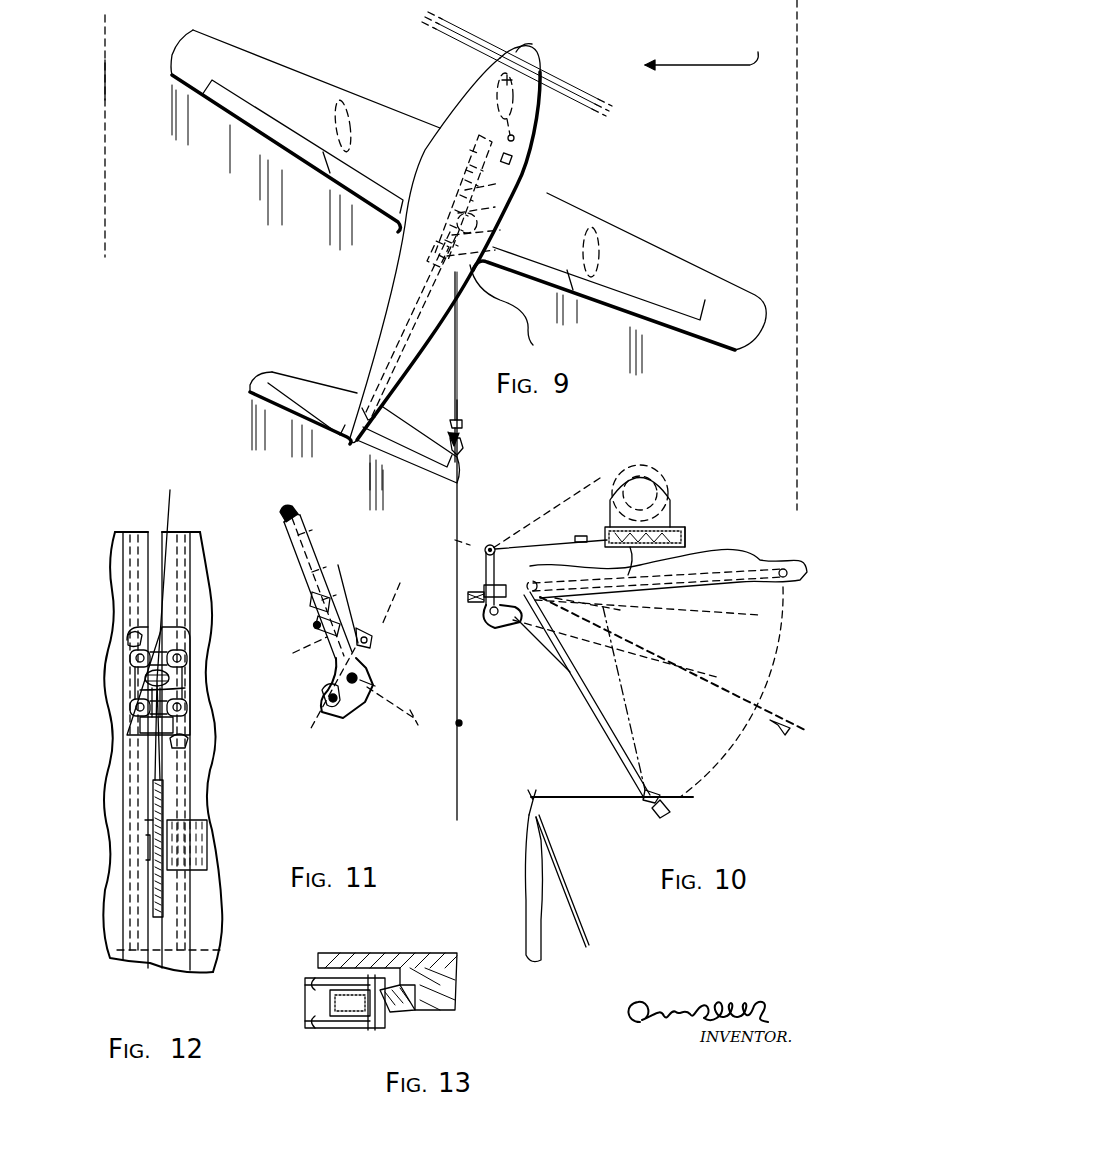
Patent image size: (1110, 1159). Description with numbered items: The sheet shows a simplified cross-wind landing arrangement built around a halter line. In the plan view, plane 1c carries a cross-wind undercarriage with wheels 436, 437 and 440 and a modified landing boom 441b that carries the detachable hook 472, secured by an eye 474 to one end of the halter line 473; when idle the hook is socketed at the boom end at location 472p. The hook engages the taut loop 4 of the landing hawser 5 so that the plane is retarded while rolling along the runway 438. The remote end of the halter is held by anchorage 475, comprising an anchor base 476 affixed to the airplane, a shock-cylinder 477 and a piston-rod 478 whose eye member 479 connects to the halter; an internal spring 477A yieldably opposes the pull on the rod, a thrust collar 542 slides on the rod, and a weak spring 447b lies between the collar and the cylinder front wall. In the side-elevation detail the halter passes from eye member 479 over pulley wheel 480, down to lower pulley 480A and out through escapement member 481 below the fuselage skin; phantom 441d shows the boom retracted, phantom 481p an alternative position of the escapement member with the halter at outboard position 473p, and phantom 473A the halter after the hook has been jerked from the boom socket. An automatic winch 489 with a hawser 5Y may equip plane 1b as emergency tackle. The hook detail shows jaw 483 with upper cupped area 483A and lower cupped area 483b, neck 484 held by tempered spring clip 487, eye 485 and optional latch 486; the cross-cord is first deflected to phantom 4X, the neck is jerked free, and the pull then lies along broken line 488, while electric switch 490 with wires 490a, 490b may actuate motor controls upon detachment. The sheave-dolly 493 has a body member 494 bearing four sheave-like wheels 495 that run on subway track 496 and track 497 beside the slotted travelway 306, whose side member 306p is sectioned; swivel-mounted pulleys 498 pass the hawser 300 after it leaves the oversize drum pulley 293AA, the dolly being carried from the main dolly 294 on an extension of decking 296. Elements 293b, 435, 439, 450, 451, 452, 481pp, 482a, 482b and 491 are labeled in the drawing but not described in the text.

In FIG. 10, the plane 1b is at (755, 555).
In FIG. 9, the plane 1c is at (550, 62).
In FIG. 10, the loop 4 is at (455, 548).
In FIG. 11, the loop 4 is at (314, 624).
In FIG. 11, the phantom loop position 4X is at (408, 708).
In FIG. 10, the hawser 5 is at (462, 740).
In FIG. 10, the hawser 5Y is at (595, 485).
In FIG. 12, the oversize drum pulley 293AA is at (150, 820).
In FIG. 12, the slot 293b is at (195, 825).
In FIG. 12, the main dolly 294 is at (128, 785).
In FIG. 12, the decking 296 is at (140, 725).
In FIG. 12, the hawser 300 is at (172, 508).
In FIG. 12, the slotted travelway 306 is at (155, 545).
In FIG. 13, the side member 306p is at (328, 953).
In FIG. 9, the boundary line 435 is at (105, 168).
In FIG. 9, the wheel 436 is at (340, 100).
In FIG. 9, the wheel 437 is at (628, 196).
In FIG. 9, the runway 438 is at (100, 80).
In FIG. 9, the direction of flight 439 is at (701, 52).
In FIG. 9, the wheel 440 is at (520, 105).
In FIG. 9, the landing boom 441b is at (430, 310).
In FIG. 10, the landing boom 441b is at (612, 740).
In FIG. 11, the landing boom 441b is at (305, 530).
In FIG. 10, the phantom boom position 441d is at (715, 580).
In FIG. 10, the weak spring 447b is at (604, 480).
In FIG. 9, the wing 450 is at (262, 128).
In FIG. 9, the tail plane 451 is at (308, 412).
In FIG. 9, the fuselage 452 is at (340, 194).
In FIG. 9, the detachable hook 472 is at (465, 448).
In FIG. 10, the detachable hook 472 is at (780, 717).
In FIG. 11, the detachable hook 472 is at (360, 712).
In FIG. 9, the idle hook location 472p is at (388, 408).
In FIG. 9, the halter line 473 is at (457, 330).
In FIG. 10, the halter line 473 is at (570, 698).
In FIG. 11, the halter line 473 is at (312, 596).
In FIG. 10, the outboard halter position 473p is at (625, 700).
In FIG. 10, the phantom halter position 473A is at (655, 660).
In FIG. 9, the eye 474 is at (462, 424).
In FIG. 9, the anchorage 475 is at (470, 132).
In FIG. 10, the anchorage 475 is at (690, 537).
In FIG. 9, the anchor base 476 is at (470, 150).
In FIG. 10, the anchor base 476 is at (690, 613).
In FIG. 9, the shock-cylinder 477 is at (466, 170).
In FIG. 10, the shock-cylinder 477 is at (685, 527).
In FIG. 10, the internal spring 477A is at (670, 525).
In FIG. 9, the piston-rod 478 is at (500, 190).
In FIG. 10, the piston-rod 478 is at (598, 535).
In FIG. 9, the eye member 479 is at (495, 213).
In FIG. 10, the eye member 479 is at (583, 530).
In FIG. 9, the pulley wheel 480 is at (500, 237).
In FIG. 10, the pulley wheel 480 is at (490, 545).
In FIG. 10, the lower pulley 480A is at (500, 575).
In FIG. 9, the escapement member 481 is at (495, 258).
In FIG. 10, the escapement member 481 is at (478, 618).
In FIG. 10, the phantom escapement position 481p is at (515, 626).
In FIG. 10, the bracket arm 481pp is at (610, 608).
In FIG. 9, the cable guide 482a is at (525, 310).
In FIG. 9, the cable guide 482b is at (530, 158).
In FIG. 11, the jaw 483 is at (362, 672).
In FIG. 11, the upper cupped area 483A is at (378, 683).
In FIG. 11, the lower cupped area 483b is at (328, 698).
In FIG. 11, the neck 484 is at (293, 650).
In FIG. 10, the eye 485 is at (655, 790).
In FIG. 11, the eye 485 is at (375, 640).
In FIG. 11, the latch 486 is at (327, 683).
In FIG. 11, the spring clip 487 is at (388, 565).
In FIG. 11, the broken line 488 is at (400, 610).
In FIG. 10, the automatic winch 489 is at (650, 460).
In FIG. 11, the electric switch 490 is at (318, 618).
In FIG. 11, the wire 490a is at (283, 514).
In FIG. 11, the wire 490b is at (295, 500).
In FIG. 9, the ring 491 is at (540, 136).
In FIG. 12, the sheave-dolly 493 is at (145, 688).
In FIG. 12, the body member 494 is at (135, 695).
In FIG. 12, the sheave-like wheels 495 is at (133, 662).
In FIG. 13, the sheave-like wheels 495 is at (335, 1000).
In FIG. 12, the subway track 496 is at (128, 638).
In FIG. 13, the subway track 496 is at (400, 1012).
In FIG. 12, the track 497 is at (186, 742).
In FIG. 12, the pulleys 498 is at (185, 688).
In FIG. 10, the thrust collar 542 is at (630, 548).